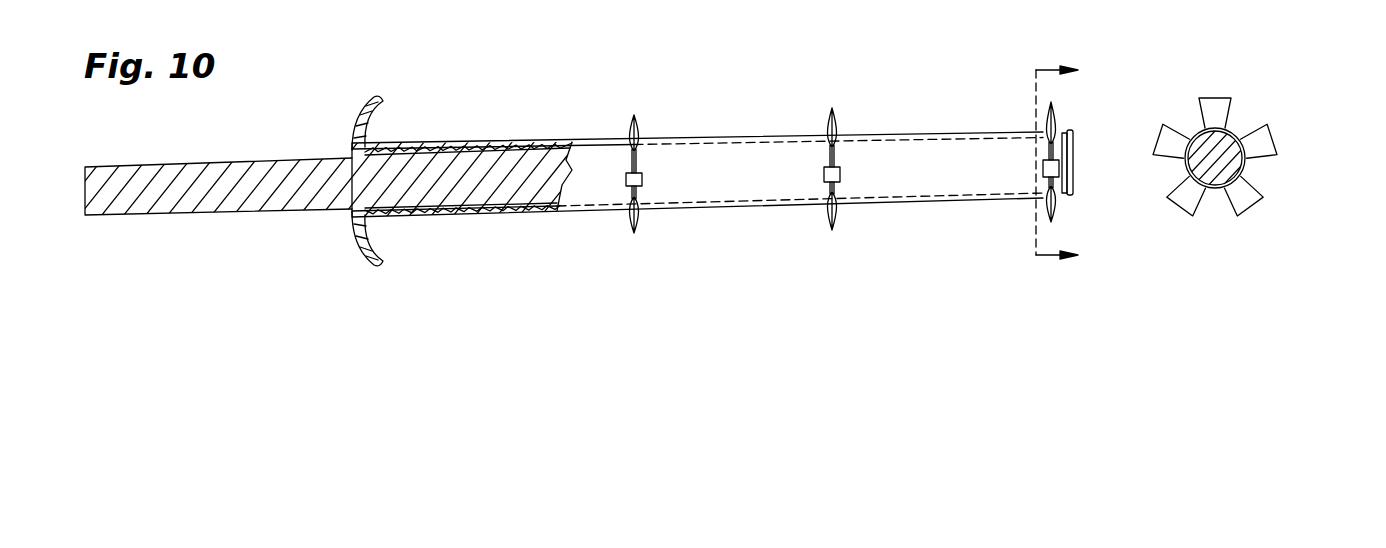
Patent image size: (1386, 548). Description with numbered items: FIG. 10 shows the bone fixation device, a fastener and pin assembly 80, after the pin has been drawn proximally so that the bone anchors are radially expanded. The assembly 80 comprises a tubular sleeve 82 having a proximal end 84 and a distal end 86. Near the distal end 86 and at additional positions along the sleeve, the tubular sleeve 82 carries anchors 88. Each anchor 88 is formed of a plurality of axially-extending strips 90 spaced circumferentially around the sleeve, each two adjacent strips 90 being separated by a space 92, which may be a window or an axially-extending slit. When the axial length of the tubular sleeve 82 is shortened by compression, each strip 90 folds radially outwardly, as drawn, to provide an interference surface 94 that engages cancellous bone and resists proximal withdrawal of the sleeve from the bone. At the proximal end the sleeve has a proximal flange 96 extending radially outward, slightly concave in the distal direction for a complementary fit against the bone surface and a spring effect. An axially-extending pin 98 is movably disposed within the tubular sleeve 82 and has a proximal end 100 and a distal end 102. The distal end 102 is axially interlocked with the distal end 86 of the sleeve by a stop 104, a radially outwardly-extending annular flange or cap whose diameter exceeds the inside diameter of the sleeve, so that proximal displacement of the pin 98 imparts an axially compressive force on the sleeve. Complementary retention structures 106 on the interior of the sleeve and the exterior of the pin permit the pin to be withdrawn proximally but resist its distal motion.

The fastener and pin assembly 80 is at (594, 112).
The tubular sleeve 82 is at (713, 141).
The proximal end 84 is at (380, 128).
The distal end 86 is at (1008, 113).
The anchor 88 is at (633, 258).
The axially-extending strip 90 is at (1219, 100).
The space 92 is at (640, 181).
The interference surface 94 is at (633, 130).
The proximal flange 96 is at (379, 272).
The pin 98 is at (1226, 162).
The proximal end 100 is at (150, 176).
The distal end 102 is at (1070, 138).
The stop 104 is at (1075, 146).
The retention structures 106 is at (430, 148).